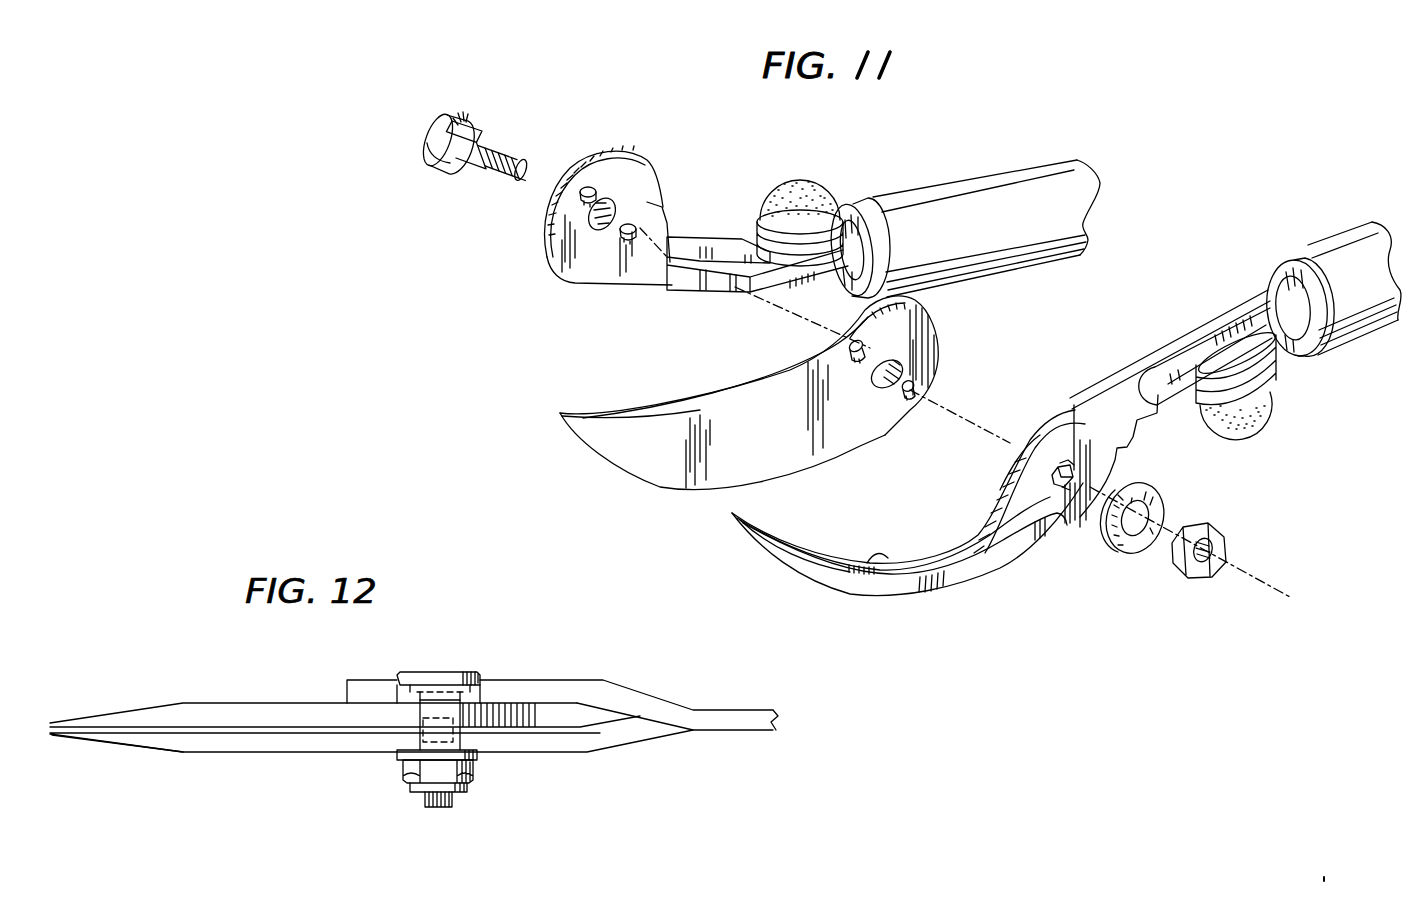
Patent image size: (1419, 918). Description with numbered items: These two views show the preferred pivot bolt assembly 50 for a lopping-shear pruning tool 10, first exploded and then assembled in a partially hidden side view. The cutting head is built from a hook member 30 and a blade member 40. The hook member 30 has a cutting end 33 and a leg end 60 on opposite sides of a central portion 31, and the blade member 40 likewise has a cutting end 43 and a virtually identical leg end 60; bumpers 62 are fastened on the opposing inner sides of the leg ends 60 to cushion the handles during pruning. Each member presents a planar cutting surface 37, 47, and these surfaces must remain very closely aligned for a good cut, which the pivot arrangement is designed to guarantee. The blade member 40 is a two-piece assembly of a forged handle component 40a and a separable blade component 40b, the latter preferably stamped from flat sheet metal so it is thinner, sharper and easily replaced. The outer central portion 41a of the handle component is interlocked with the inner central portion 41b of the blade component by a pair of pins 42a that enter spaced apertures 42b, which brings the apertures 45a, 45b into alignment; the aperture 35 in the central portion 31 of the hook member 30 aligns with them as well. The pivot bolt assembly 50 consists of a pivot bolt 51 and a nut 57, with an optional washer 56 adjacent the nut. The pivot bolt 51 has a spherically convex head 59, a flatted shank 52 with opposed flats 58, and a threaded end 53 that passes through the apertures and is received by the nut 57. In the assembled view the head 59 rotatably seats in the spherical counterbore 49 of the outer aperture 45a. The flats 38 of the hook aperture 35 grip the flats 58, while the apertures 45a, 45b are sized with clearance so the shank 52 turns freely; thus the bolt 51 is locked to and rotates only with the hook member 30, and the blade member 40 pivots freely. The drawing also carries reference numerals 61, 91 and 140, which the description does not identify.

In FIG. 11, the pruning tool 10 is at (1189, 163).
In FIG. 11, the hook member 30 is at (982, 578).
In FIG. 12, the hook member 30 is at (285, 752).
In FIG. 11, the central portion of hook member 31 is at (1042, 438).
In FIG. 12, the central portion of hook member 31 is at (410, 740).
In FIG. 11, the cutting end of hook member 33 is at (811, 577).
In FIG. 11, the aperture in hook member 35 is at (1056, 472).
In FIG. 11, the planar cutting surface of hook member 37 is at (887, 557).
In FIG. 12, the planar cutting surface of hook member 37 is at (185, 750).
In FIG. 11, the flats of hook aperture 38 is at (1070, 465).
In FIG. 11, the blade member 40 is at (606, 505).
In FIG. 11, the handle component 40a is at (641, 152).
In FIG. 12, the handle component 40a is at (657, 640).
In FIG. 11, the blade component 40b is at (735, 395).
In FIG. 12, the blade component 40b is at (268, 700).
In FIG. 11, the central portion of handle component 41a is at (548, 236).
In FIG. 12, the central portion of handle component 41a is at (383, 687).
In FIG. 11, the central portion of blade component 41b is at (936, 350).
In FIG. 12, the central portion of blade component 41b is at (395, 712).
In FIG. 11, the pins 42a is at (590, 186).
In FIG. 11, the spaced apertures 42b is at (856, 342).
In FIG. 11, the cutting end of blade member 43 is at (598, 430).
In FIG. 11, the outer aperture of handle component 45a is at (607, 216).
In FIG. 12, the outer aperture of handle component 45a is at (440, 740).
In FIG. 11, the aperture of blade component 45b is at (882, 388).
In FIG. 11, the planar cutting surface of blade member 47 is at (762, 443).
In FIG. 12, the planar cutting surface of blade member 47 is at (175, 727).
In FIG. 12, the spherical counterbore 49 is at (400, 690).
In FIG. 11, the pivot bolt assembly 50 is at (421, 160).
In FIG. 11, the pivot bolt 51 is at (441, 116).
In FIG. 12, the pivot bolt 51 is at (453, 670).
In FIG. 11, the flatted shank 52 is at (478, 124).
In FIG. 12, the flatted shank 52 is at (477, 692).
In FIG. 11, the threaded end 53 is at (530, 182).
In FIG. 12, the threaded end 53 is at (455, 808).
In FIG. 11, the washer 56 is at (1128, 542).
In FIG. 12, the washer 56 is at (480, 757).
In FIG. 11, the nut 57 is at (1213, 521).
In FIG. 12, the nut 57 is at (477, 770).
In FIG. 11, the opposed flats 58 is at (450, 165).
In FIG. 12, the opposed flats 58 is at (407, 745).
In FIG. 11, the spherically convex head 59 is at (471, 115).
In FIG. 12, the spherically convex head 59 is at (470, 690).
In FIG. 11, the leg end 60 is at (763, 272).
In FIG. 11, the ferrule 61 is at (852, 207).
In FIG. 11, the bumpers 62 is at (800, 176).
In FIG. 11, the handle grip 91 is at (953, 185).
In FIG. 11, the collar 140 is at (878, 196).